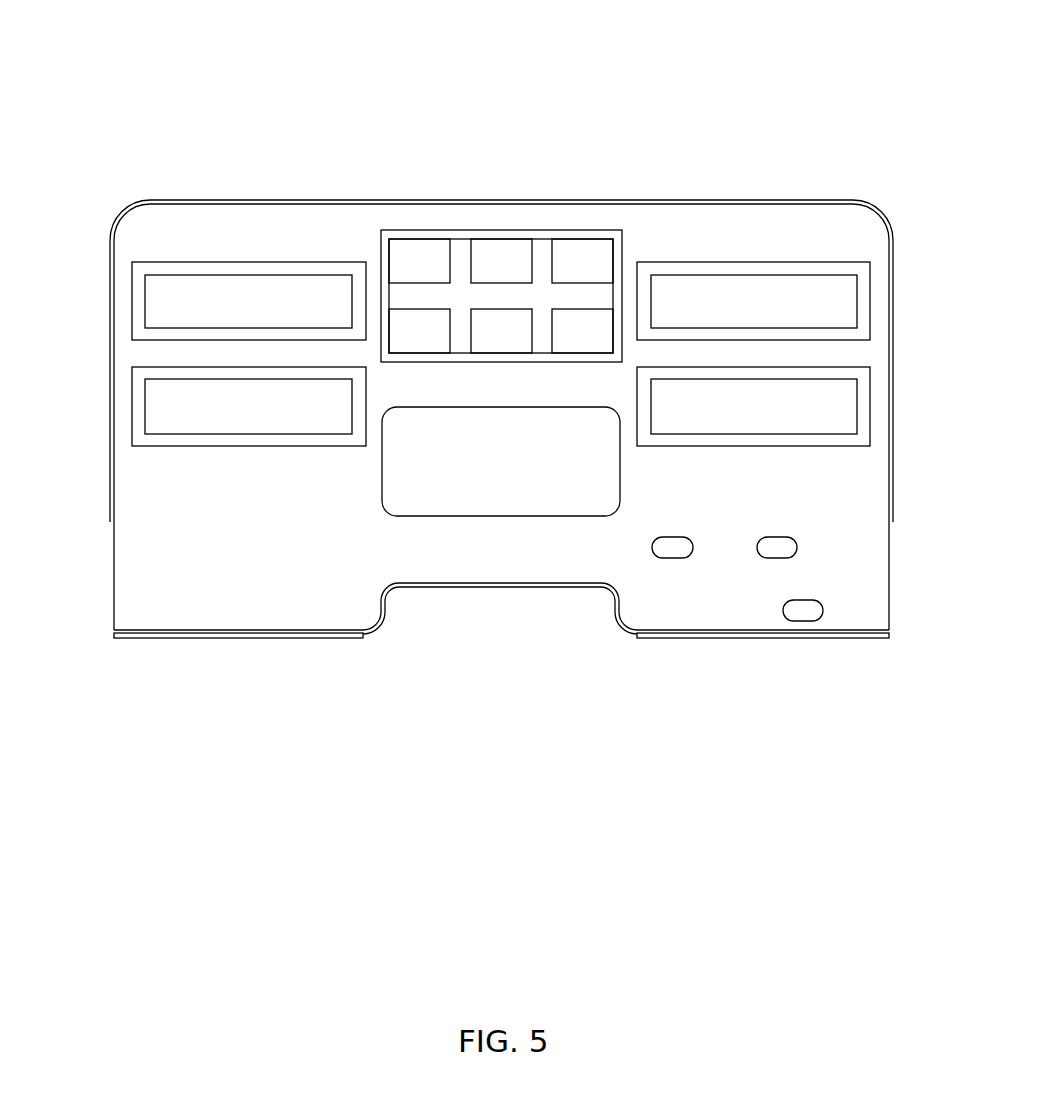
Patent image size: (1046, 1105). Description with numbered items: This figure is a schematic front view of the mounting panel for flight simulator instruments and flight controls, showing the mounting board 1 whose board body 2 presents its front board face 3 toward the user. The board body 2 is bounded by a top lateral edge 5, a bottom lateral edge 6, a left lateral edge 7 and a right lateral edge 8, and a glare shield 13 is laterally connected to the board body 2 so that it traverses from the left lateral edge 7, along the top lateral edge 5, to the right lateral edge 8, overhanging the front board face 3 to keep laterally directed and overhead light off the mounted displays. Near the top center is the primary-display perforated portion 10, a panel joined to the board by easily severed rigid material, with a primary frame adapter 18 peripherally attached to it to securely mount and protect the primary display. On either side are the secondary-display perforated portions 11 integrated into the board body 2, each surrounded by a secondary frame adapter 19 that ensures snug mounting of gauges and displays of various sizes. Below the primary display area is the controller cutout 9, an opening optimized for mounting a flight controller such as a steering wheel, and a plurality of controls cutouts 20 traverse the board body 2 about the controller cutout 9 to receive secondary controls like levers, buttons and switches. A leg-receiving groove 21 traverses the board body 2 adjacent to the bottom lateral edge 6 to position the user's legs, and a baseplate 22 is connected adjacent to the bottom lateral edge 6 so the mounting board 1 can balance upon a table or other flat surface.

The mounting board 1 is at (366, 51).
The board body 2 is at (330, 700).
The front board face 3 is at (256, 551).
The top lateral edge 5 is at (770, 200).
The bottom lateral edge 6 is at (630, 637).
The left lateral edge 7 is at (110, 532).
The right lateral edge 8 is at (888, 532).
The controller cutout 9 is at (445, 516).
The primary-display perforated portion 10 is at (500, 237).
The secondary-display perforated portions 11 is at (335, 277).
The glare shield 13 is at (165, 200).
The primary frame adapter 18 is at (583, 236).
The secondary frame adapter 19 is at (276, 265).
The controls cutouts 20 is at (678, 558).
The leg-receiving groove 21 is at (567, 626).
The baseplate 22 is at (175, 640).